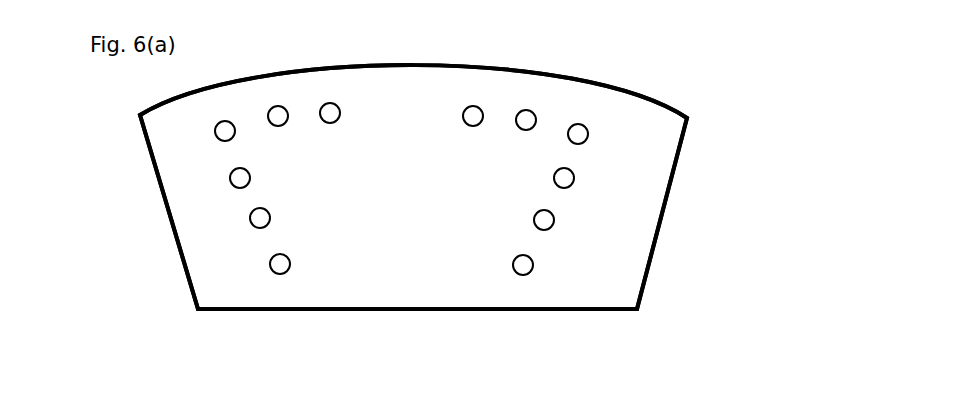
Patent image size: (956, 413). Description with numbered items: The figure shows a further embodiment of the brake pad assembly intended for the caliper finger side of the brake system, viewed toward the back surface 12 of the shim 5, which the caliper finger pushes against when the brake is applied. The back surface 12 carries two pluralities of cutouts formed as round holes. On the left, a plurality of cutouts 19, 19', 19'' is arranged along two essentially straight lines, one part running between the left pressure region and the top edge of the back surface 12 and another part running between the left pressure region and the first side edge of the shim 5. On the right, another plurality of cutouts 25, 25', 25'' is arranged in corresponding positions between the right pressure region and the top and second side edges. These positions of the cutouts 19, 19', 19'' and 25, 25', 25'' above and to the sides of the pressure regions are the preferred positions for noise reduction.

The shim 5 is at (392, 300).
The back surface 12 is at (413, 187).
The cutout 19 is at (210, 190).
The cutout 19' is at (249, 86).
The cutout 19'' is at (357, 66).
The cutout 25 is at (495, 68).
The cutout 25' is at (603, 88).
The cutout 25'' is at (613, 192).